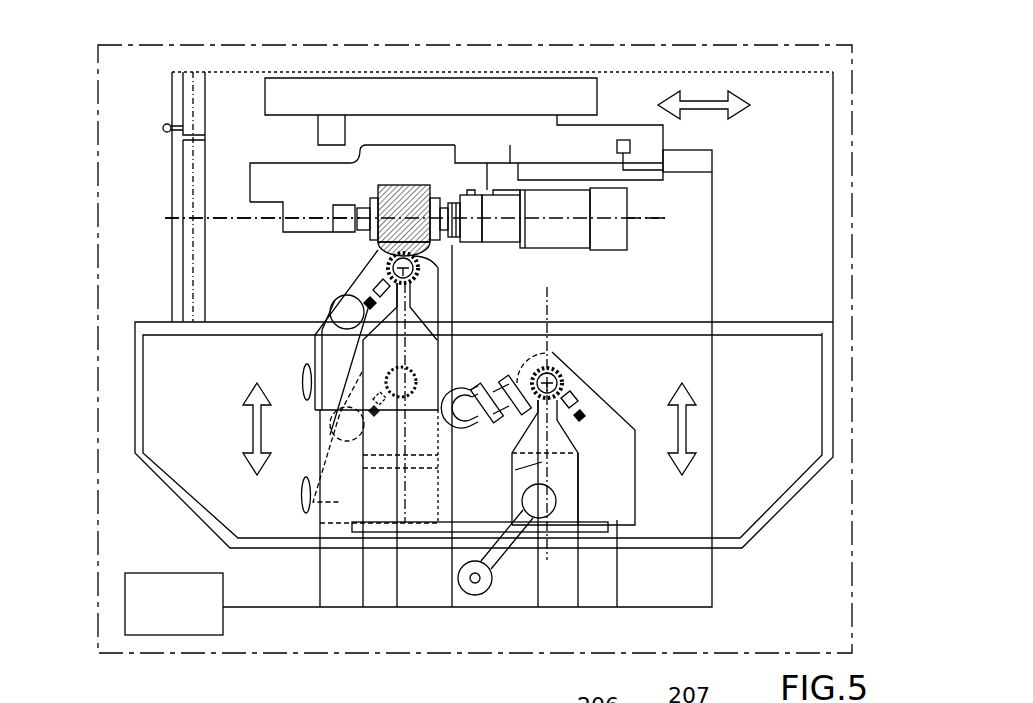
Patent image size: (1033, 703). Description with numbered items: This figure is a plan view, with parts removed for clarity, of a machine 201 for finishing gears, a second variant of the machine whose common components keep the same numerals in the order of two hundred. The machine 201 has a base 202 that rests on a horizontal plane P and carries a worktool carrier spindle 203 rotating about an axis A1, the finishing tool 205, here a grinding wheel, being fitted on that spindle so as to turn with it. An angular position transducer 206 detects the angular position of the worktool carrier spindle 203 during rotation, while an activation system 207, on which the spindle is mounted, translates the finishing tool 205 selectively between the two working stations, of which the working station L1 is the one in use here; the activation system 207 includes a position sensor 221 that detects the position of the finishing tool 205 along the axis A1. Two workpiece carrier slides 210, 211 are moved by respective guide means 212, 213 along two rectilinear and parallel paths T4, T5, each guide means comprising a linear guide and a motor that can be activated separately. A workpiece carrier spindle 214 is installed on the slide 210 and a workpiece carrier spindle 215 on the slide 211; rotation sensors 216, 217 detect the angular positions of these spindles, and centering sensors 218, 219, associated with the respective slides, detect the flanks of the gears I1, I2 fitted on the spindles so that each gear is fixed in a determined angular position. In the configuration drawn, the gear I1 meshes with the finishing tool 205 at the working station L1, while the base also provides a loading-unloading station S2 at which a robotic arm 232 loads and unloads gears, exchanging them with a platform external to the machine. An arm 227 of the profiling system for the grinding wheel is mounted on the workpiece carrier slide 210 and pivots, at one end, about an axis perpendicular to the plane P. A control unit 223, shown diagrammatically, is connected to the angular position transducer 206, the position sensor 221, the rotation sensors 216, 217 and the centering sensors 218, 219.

The finishing machine 201 is at (84, 110).
The carriage slide 202 is at (232, 80).
The headstock 203 is at (378, 185).
The finishing tool 205 is at (403, 185).
The angular position transducer 206 is at (483, 125).
The activation system 207 is at (490, 125).
The position sensor 221 is at (623, 140).
The horizontal plane P is at (843, 88).
The workpiece carrier slide 210 is at (302, 281).
The centering sensor 218 is at (333, 296).
The guide element 227 is at (330, 358).
The workpiece carrier spindle 214 is at (420, 263).
The rotation sensor 216 is at (427, 287).
The guide means 212 is at (423, 314).
The coupling 232 is at (489, 372).
The rotation sensor 217 is at (547, 365).
The workpiece carrier slide 211 is at (628, 352).
The workpiece carrier spindle 215 is at (562, 382).
The centering sensor 219 is at (585, 418).
The guide means 213 is at (583, 453).
The control unit 223 is at (174, 592).
The axis A1 is at (638, 224).
The working station L1 is at (340, 246).
The gear I1 is at (388, 272).
The gear I2 is at (565, 385).
The loading-unloading station S2 is at (609, 376).
The path T4 is at (403, 548).
The path T5 is at (548, 552).